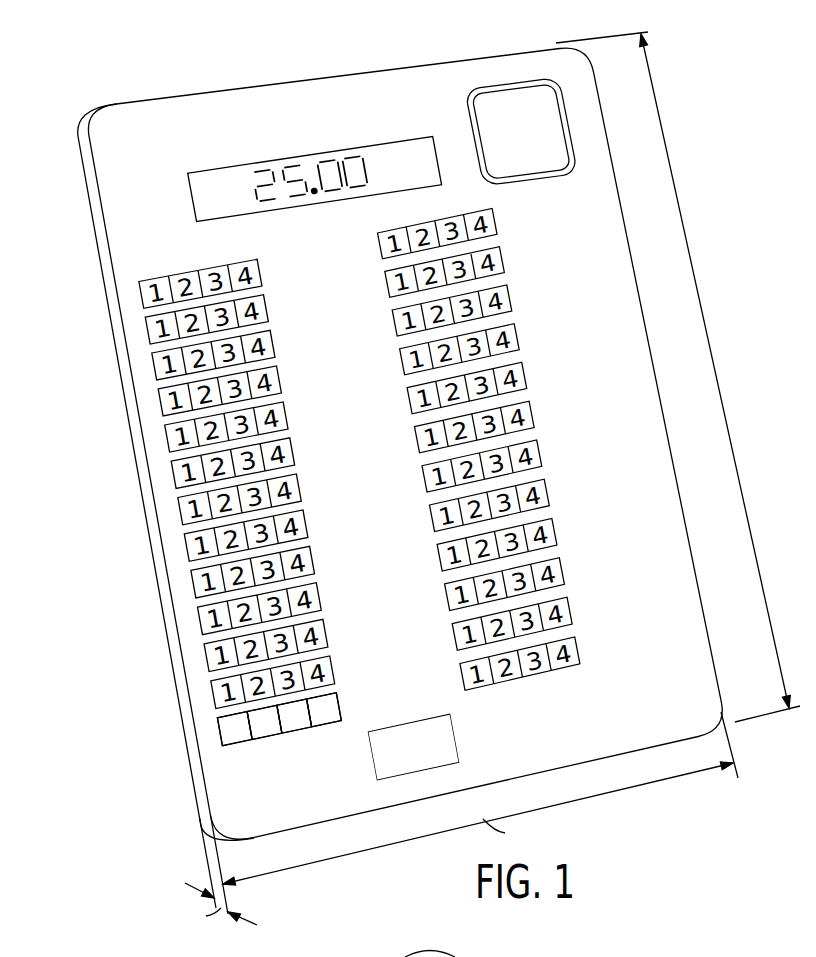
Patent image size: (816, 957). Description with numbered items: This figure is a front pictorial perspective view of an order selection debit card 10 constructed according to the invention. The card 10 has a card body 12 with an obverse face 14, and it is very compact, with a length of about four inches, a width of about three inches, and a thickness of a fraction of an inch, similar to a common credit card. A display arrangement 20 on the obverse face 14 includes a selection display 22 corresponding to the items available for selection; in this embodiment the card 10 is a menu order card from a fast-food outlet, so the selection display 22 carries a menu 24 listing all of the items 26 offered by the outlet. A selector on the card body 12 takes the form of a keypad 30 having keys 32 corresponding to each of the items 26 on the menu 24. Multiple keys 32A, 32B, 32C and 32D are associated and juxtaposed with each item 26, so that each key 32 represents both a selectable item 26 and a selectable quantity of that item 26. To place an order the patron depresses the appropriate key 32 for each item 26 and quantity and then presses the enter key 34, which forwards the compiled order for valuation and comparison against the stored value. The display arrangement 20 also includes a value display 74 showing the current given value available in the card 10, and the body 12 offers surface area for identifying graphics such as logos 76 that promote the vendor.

The order selection debit card 10 is at (176, 86).
The card body 12 is at (108, 153).
The obverse face 14 is at (315, 160).
The display arrangement 20 is at (355, 479).
The selection display 22 is at (158, 433).
The menu 24 is at (285, 258).
The items 26 is at (615, 283).
The keypad 30 is at (192, 622).
The keys 32 is at (193, 568).
The key 32A is at (237, 740).
The key 32B is at (268, 733).
The key 32C is at (302, 729).
The key 32D is at (334, 722).
The enter key 34 is at (457, 745).
The value display 74 is at (309, 179).
The logos 76 is at (520, 93).